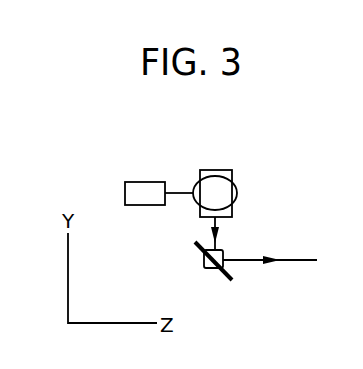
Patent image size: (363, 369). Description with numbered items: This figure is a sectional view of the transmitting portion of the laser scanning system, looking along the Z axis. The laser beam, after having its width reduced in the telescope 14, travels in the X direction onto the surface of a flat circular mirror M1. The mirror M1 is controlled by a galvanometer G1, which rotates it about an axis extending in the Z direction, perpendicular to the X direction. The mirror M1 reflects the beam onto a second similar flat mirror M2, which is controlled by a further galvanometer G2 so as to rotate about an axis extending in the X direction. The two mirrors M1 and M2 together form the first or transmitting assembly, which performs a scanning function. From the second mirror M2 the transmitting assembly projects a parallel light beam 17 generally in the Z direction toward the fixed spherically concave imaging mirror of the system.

The galvanometer G1 is at (139, 189).
The telescope 14 is at (218, 176).
The flat circular mirror M1 is at (230, 193).
The further galvanometer G2 is at (226, 246).
The second mirror M2 is at (218, 273).
The parallel light beam 17 is at (290, 260).